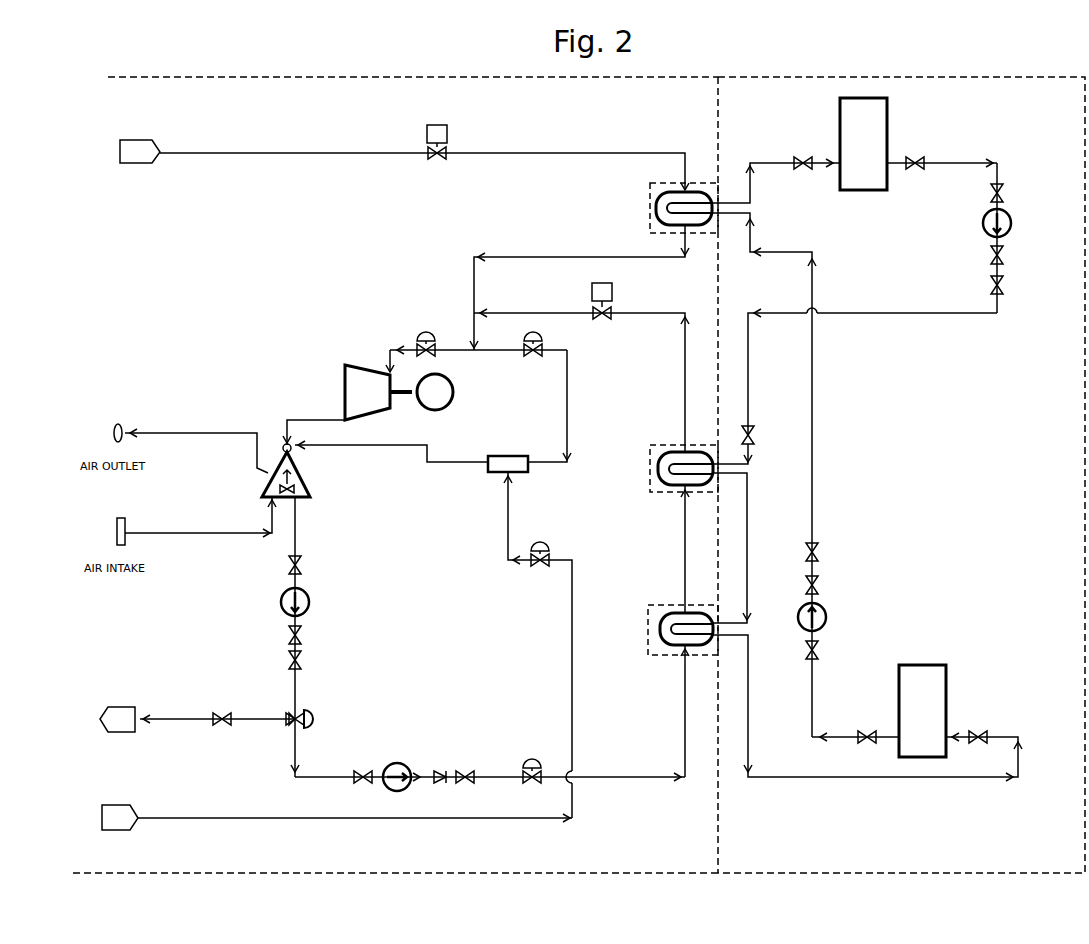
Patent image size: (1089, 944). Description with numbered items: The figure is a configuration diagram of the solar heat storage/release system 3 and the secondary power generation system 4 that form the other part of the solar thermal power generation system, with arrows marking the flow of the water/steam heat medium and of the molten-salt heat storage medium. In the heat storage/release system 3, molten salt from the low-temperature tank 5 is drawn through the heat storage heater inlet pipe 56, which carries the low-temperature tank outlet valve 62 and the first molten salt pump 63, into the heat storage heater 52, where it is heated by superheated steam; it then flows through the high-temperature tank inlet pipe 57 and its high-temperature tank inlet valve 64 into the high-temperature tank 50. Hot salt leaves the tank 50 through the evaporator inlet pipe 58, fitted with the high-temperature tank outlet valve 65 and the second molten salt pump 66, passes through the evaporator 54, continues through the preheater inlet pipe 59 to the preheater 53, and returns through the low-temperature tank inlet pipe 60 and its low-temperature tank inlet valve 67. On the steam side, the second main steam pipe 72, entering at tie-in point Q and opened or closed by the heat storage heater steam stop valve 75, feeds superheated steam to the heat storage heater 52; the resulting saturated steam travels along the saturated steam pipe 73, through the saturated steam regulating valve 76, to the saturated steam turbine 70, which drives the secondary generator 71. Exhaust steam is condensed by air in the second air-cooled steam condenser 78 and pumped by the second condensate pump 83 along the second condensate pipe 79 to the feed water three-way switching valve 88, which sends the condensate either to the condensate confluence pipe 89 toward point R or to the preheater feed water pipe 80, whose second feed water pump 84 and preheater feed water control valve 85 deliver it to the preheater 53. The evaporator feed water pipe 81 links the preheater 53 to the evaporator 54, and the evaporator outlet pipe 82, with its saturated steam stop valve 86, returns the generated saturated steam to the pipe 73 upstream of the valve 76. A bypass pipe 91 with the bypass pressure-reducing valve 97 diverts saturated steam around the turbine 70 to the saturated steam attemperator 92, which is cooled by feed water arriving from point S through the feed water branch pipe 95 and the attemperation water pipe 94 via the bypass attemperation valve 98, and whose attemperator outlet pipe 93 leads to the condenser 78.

The solar heat storage/release system 3 is at (915, 858).
The secondary power generation system 4 is at (462, 858).
The heat source 5 is at (921, 665).
The high-temperature tank 50 is at (887, 101).
The heat storage heater 52 is at (708, 202).
The preheater 53 is at (710, 648).
The evaporator 54 is at (708, 486).
The heat storage heater inlet pipe 56 is at (813, 472).
The high-temperature tank inlet pipe 57 is at (756, 162).
The evaporator inlet pipe 58 is at (916, 312).
The preheater inlet pipe 59 is at (748, 525).
The low-temperature tank inlet pipe 60 is at (868, 778).
The low-temperature tank outlet valve 62 is at (864, 731).
The first molten salt pump 63 is at (826, 610).
The high-temperature tank inlet valve 64 is at (803, 158).
The high-temperature tank outlet valve 65 is at (916, 160).
The second molten salt pump 66 is at (1014, 225).
The low-temperature tank inlet valve 67 is at (979, 732).
The saturated steam turbine 70 is at (362, 365).
The secondary generator 71 is at (455, 398).
The second main steam pipe 72 is at (299, 150).
The saturated steam pipe 73 is at (473, 283).
The heat storage heater steam stop valve 75 is at (448, 133).
The saturated steam regulating valve 76 is at (418, 341).
The second air-cooled steam condenser 78 is at (306, 486).
The second condensate pipe 79 is at (297, 533).
The preheater feed water pipe 80 is at (614, 774).
The evaporator feed water pipe 81 is at (678, 551).
The evaporator outlet pipe 82 is at (676, 383).
The second condensate pump 83 is at (310, 605).
The second feed water pump 84 is at (400, 762).
The preheater feed water control valve 85 is at (530, 762).
The saturated steam stop valve 86 is at (613, 292).
The feed water three-way switching valve 88 is at (312, 718).
The condensate confluence pipe 89 is at (168, 715).
The bypass pipe 91 is at (568, 412).
The saturated steam attemperator 92 is at (510, 456).
The attemperator outlet pipe 93 is at (440, 465).
The attemperation water pipe 94 is at (571, 661).
The feed water branch pipe 95 is at (252, 816).
The bypass pressure-reducing valve 97 is at (541, 334).
The bypass attemperation valve 98 is at (538, 542).